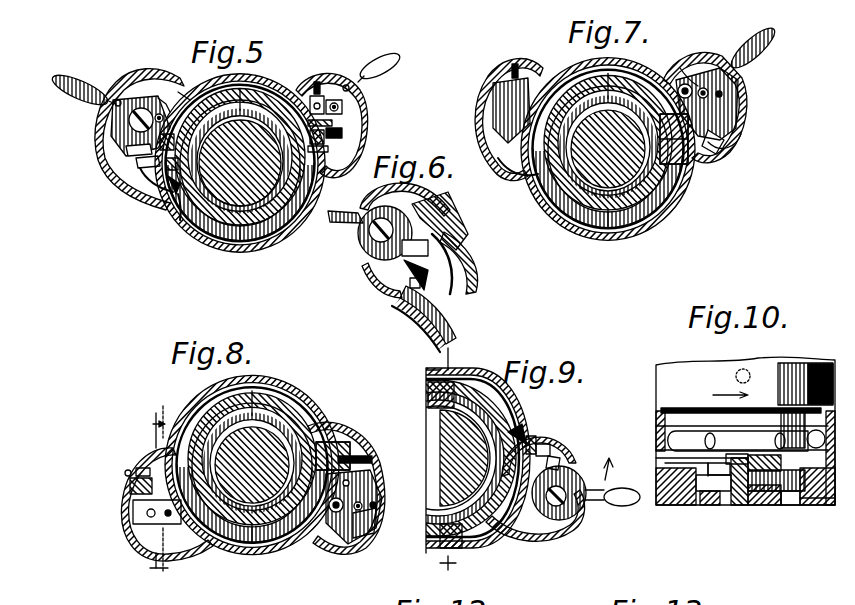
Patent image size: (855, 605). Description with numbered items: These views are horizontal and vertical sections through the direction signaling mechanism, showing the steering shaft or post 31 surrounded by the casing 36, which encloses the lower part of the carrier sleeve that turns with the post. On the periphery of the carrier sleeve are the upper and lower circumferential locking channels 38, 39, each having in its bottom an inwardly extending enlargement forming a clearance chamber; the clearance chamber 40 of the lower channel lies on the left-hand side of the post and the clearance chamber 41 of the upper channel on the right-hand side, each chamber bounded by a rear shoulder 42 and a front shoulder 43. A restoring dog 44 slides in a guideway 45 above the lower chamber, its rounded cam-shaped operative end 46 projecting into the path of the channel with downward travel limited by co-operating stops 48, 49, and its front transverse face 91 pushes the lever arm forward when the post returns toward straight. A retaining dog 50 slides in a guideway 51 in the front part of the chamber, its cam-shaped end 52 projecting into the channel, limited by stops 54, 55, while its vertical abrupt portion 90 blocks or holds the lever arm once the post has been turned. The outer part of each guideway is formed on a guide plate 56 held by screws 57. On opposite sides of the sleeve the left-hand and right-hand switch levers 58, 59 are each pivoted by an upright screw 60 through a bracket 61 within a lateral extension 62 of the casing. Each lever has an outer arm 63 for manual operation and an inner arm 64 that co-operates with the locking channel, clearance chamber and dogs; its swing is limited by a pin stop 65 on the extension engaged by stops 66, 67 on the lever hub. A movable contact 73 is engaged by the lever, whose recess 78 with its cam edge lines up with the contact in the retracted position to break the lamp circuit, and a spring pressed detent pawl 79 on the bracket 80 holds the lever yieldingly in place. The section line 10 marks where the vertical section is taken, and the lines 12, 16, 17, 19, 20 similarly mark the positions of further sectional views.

In FIG. 9, the section line 10 is at (442, 352).
In FIG. 8, the section line 12 is at (132, 602).
In FIG. 10, the pin 16 is at (730, 450).
In FIG. 10, the sleeve 17 is at (780, 403).
In FIG. 8, the section line 19 is at (148, 440).
In FIG. 8, the section line 20 is at (175, 565).
In FIG. 5, the steering shaft or post 31 is at (245, 140).
In FIG. 6, the steering shaft or post 31 is at (466, 252).
In FIG. 7, the steering shaft or post 31 is at (610, 122).
In FIG. 8, the steering shaft or post 31 is at (238, 500).
In FIG. 9, the steering shaft or post 31 is at (438, 458).
In FIG. 5, the casing 36 is at (122, 72).
In FIG. 7, the casing 36 is at (485, 82).
In FIG. 8, the casing 36 is at (274, 385).
In FIG. 9, the casing 36 is at (516, 530).
In FIG. 5, the upper locking channel 38 is at (258, 222).
In FIG. 10, the upper locking channel 38 is at (690, 400).
In FIG. 7, the lower locking channel 39 is at (664, 194).
In FIG. 9, the lower locking channel 39 is at (432, 530).
In FIG. 10, the lower locking channel 39 is at (672, 457).
In FIG. 7, the clearance chamber 40 is at (680, 160).
In FIG. 10, the clearance chamber 40 is at (752, 490).
In FIG. 5, the clearance chamber 41 is at (160, 125).
In FIG. 6, the clearance chamber 41 is at (450, 204).
In FIG. 5, the rear shoulder 42 is at (186, 118).
In FIG. 6, the rear shoulder 42 is at (424, 319).
In FIG. 7, the rear shoulder 42 is at (648, 72).
In FIG. 8, the rear shoulder 42 is at (282, 534).
In FIG. 9, the rear shoulder 42 is at (478, 522).
In FIG. 10, the front shoulder 43 is at (712, 470).
In FIG. 10, the restoring dog 44 is at (760, 447).
In FIG. 8, the guideway 45 is at (352, 450).
In FIG. 10, the guideway 45 is at (818, 439).
In FIG. 5, the operative end of restoring dog 46 is at (130, 152).
In FIG. 6, the operative end of restoring dog 46 is at (396, 246).
In FIG. 8, the operative end of restoring dog 46 is at (332, 434).
In FIG. 10, the stop 48 is at (806, 356).
In FIG. 10, the stop 49 is at (805, 497).
In FIG. 10, the retaining dog 50 is at (694, 490).
In FIG. 10, the guideway 51 is at (698, 428).
In FIG. 5, the operative end of retaining dog 52 is at (170, 202).
In FIG. 6, the operative end of retaining dog 52 is at (414, 286).
In FIG. 9, the operative end of retaining dog 52 is at (514, 416).
In FIG. 10, the operative end of retaining dog 52 is at (726, 458).
In FIG. 10, the stop 54 is at (714, 384).
In FIG. 10, the stop 55 is at (738, 441).
In FIG. 9, the guide plate 56 is at (528, 430).
In FIG. 10, the screws 57 is at (690, 412).
In FIG. 7, the switch lever 58 is at (732, 98).
In FIG. 9, the switch lever 58 is at (559, 493).
In FIG. 5, the switch lever 59 is at (118, 112).
In FIG. 6, the switch lever 59 is at (366, 232).
In FIG. 5, the upright screw 60 is at (106, 92).
In FIG. 7, the upright screw 60 is at (716, 82).
In FIG. 8, the upright screw 60 is at (346, 480).
In FIG. 5, the bracket 61 is at (310, 86).
In FIG. 7, the bracket 61 is at (506, 58).
In FIG. 5, the lateral extension 62 is at (140, 168).
In FIG. 6, the lateral extension 62 is at (380, 280).
In FIG. 7, the lateral extension 62 is at (500, 158).
In FIG. 5, the outer arm 63 is at (52, 86).
In FIG. 7, the outer arm 63 is at (762, 32).
In FIG. 9, the outer arm 63 is at (612, 482).
In FIG. 5, the inner arm 64 is at (150, 178).
In FIG. 7, the inner arm 64 is at (728, 130).
In FIG. 9, the inner arm 64 is at (552, 430).
In FIG. 10, the inner arm 64 is at (782, 497).
In FIG. 5, the stop 65 is at (176, 88).
In FIG. 6, the stop 65 is at (416, 190).
In FIG. 8, the stop 65 is at (350, 534).
In FIG. 5, the stop 66 is at (118, 142).
In FIG. 5, the stop 67 is at (158, 96).
In FIG. 5, the movable contact 73 is at (159, 118).
In FIG. 7, the movable contact 73 is at (682, 88).
In FIG. 8, the movable contact 73 is at (318, 530).
In FIG. 7, the recess 78 is at (690, 76).
In FIG. 7, the detent pawl 79 is at (702, 85).
In FIG. 8, the detent pawl 79 is at (370, 497).
In FIG. 5, the bracket 80 is at (334, 126).
In FIG. 8, the bracket 80 is at (122, 478).
In FIG. 6, the vertical abrupt portion 90 is at (402, 280).
In FIG. 9, the front transverse face 91 is at (538, 438).